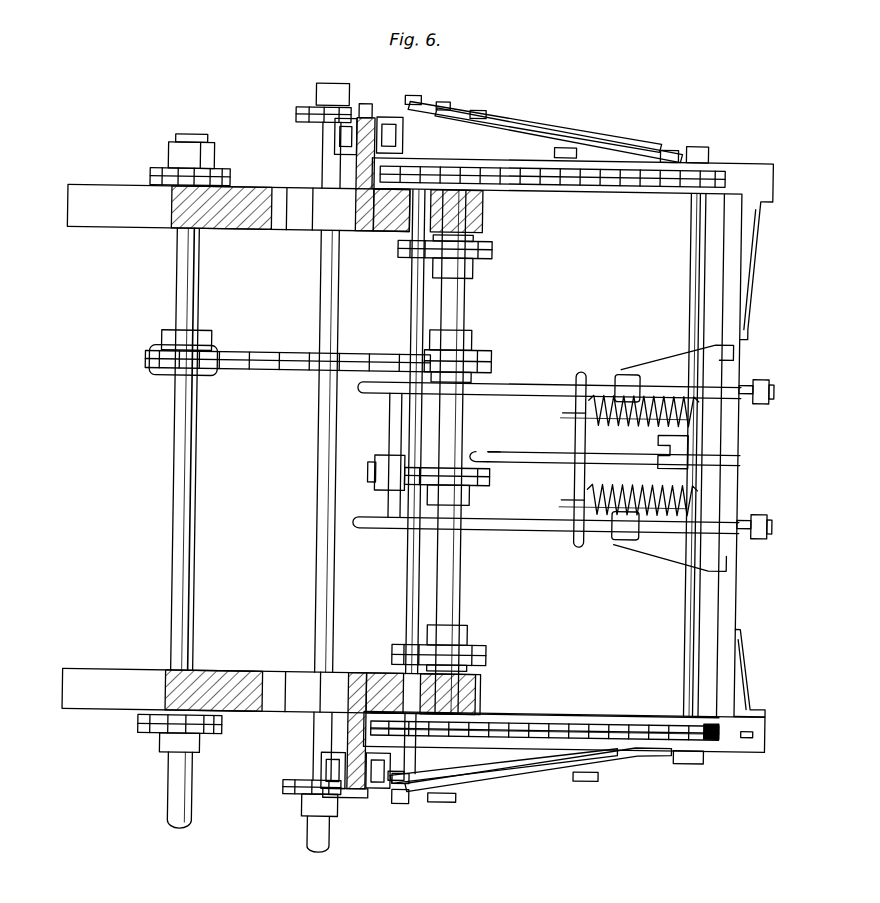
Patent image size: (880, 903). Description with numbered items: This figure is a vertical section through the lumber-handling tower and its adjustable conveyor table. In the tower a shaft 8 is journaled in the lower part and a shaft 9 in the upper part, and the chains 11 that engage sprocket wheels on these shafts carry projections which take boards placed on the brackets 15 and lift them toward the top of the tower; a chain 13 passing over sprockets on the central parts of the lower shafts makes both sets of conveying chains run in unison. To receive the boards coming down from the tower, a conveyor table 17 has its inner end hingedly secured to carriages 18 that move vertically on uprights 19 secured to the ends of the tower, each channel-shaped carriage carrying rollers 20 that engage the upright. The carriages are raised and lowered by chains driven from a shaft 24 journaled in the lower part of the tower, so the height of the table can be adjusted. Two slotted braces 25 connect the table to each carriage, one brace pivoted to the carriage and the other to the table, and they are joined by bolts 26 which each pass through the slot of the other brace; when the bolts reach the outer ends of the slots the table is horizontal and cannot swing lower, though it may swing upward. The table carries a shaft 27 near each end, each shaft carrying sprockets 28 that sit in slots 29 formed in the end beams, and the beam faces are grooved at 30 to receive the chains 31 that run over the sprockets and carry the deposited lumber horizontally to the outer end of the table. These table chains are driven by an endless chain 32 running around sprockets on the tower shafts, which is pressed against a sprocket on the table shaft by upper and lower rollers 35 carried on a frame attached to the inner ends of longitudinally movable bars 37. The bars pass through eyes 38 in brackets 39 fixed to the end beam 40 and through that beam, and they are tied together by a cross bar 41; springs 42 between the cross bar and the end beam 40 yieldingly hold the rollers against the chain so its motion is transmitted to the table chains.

The shaft 8 is at (464, 320).
The shaft 9 is at (770, 739).
The chain 11 is at (214, 182).
The chain 13 is at (304, 372).
The bracket 15 is at (238, 207).
The conveyor table 17 is at (572, 241).
The carriage 18 is at (398, 139).
The upright 19 is at (351, 161).
The roller 20 is at (329, 139).
The shaft 24 is at (313, 849).
The slotted brace 25 is at (535, 129).
The bolt 26 is at (450, 804).
The shaft 27 is at (408, 604).
The sprocket 28 is at (474, 700).
The slot 29 is at (725, 732).
The groove 30 is at (579, 718).
The chain 31 is at (630, 722).
The endless chain 32 is at (481, 484).
The roller 35 is at (382, 463).
The longitudinally movable bar 37 is at (566, 530).
The eye 38 is at (628, 374).
The bracket 39 is at (650, 542).
The end beam 40 is at (730, 510).
The cross bar 41 is at (580, 473).
The spring 42 is at (636, 426).